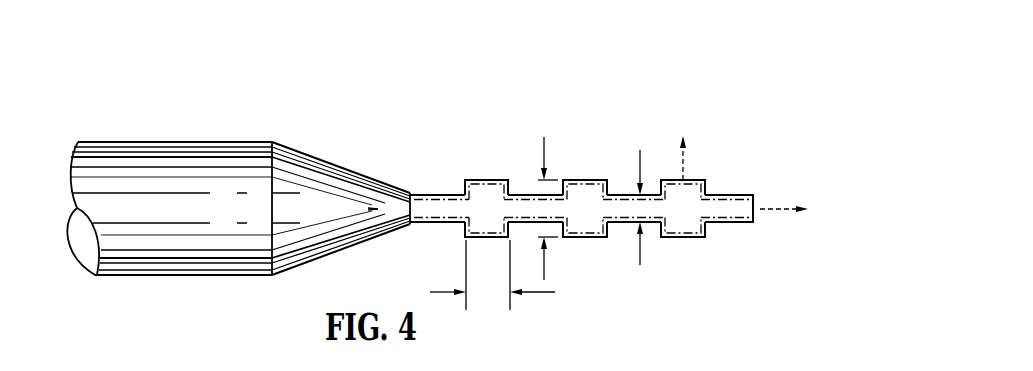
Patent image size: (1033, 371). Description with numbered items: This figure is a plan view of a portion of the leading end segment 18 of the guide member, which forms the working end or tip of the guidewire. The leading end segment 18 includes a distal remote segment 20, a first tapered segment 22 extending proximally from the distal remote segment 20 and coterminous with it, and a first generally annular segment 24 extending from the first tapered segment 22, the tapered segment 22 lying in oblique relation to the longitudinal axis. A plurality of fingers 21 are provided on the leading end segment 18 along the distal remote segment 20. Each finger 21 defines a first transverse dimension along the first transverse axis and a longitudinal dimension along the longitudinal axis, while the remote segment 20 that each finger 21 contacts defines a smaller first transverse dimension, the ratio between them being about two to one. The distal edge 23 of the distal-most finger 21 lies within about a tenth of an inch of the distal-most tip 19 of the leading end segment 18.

The leading end segment 18 is at (329, 86).
The distal-most tip 19 is at (753, 205).
The distal remote segment 20 is at (619, 71).
The finger 21 is at (482, 193).
The first tapered segment 22 is at (328, 163).
The distal edge 23 is at (705, 182).
The first generally annular segment 24 is at (195, 152).